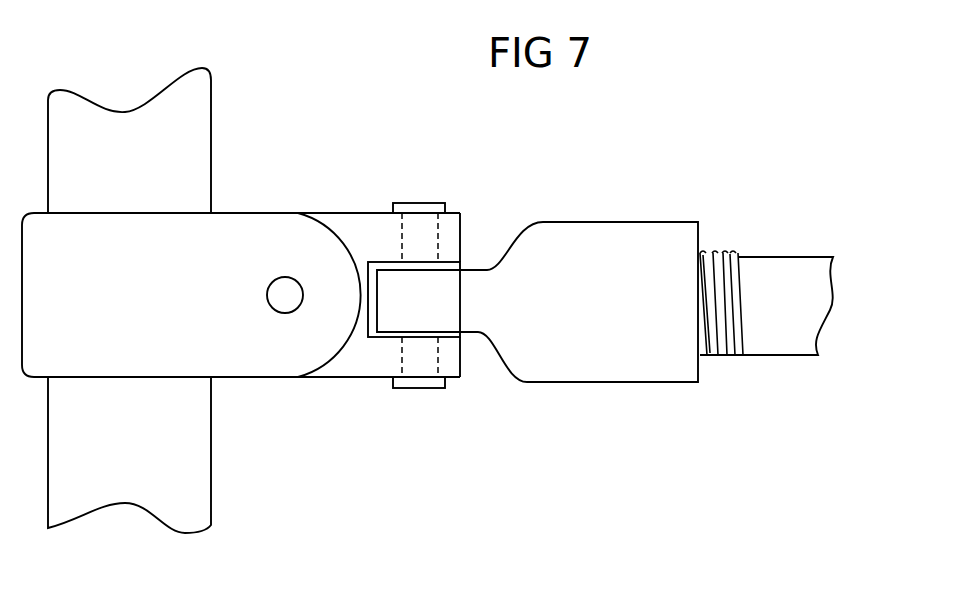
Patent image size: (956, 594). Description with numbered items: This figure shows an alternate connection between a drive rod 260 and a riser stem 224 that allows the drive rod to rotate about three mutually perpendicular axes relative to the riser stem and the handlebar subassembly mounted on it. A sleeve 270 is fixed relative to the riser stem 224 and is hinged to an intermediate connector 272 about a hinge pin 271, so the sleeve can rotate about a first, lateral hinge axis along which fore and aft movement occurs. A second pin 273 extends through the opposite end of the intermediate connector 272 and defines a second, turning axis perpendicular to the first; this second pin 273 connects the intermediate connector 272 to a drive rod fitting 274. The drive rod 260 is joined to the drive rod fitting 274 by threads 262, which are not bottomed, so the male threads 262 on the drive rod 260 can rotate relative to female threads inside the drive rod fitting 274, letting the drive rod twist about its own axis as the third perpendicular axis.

The riser stem 224 is at (173, 150).
The drive rod 260 is at (783, 275).
The threads 262 is at (720, 355).
The sleeve 270 is at (192, 270).
The hinge pin 271 is at (292, 300).
The intermediate connector 272 is at (363, 215).
The second pin 273 is at (418, 232).
The drive rod fitting 274 is at (587, 243).